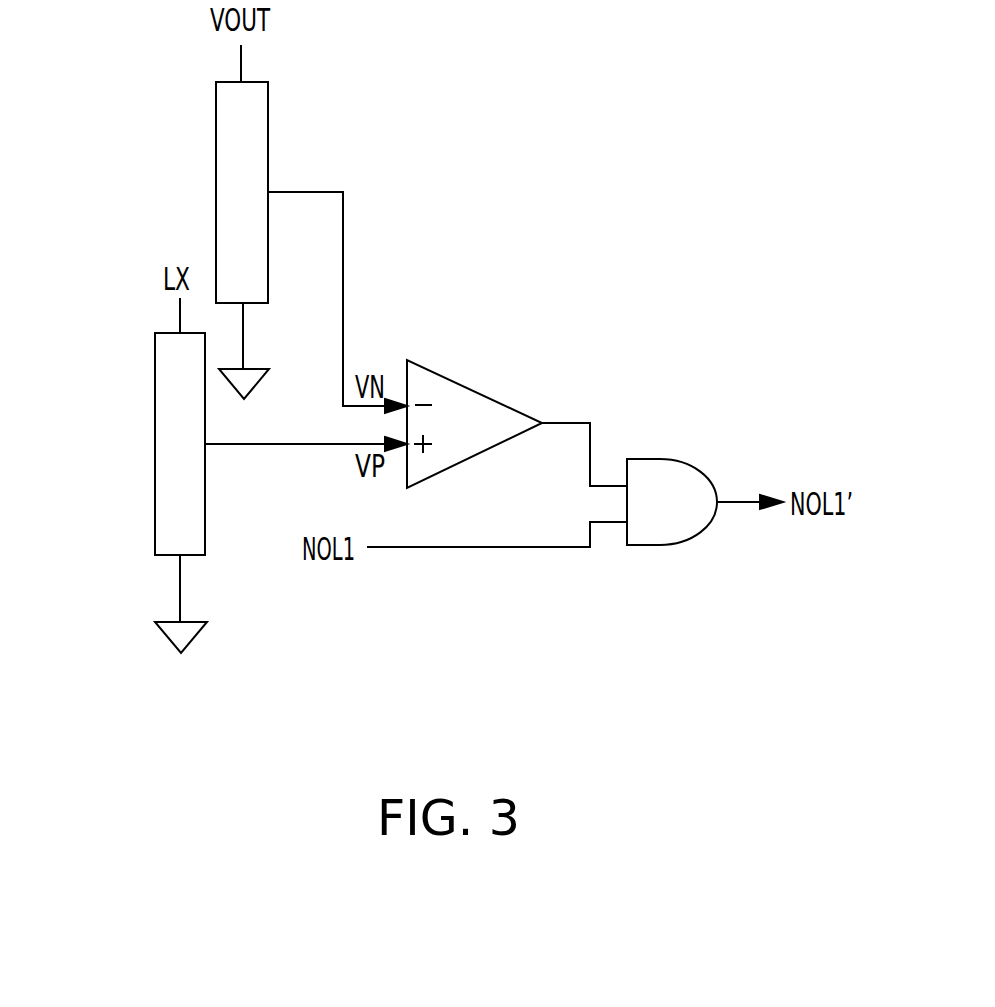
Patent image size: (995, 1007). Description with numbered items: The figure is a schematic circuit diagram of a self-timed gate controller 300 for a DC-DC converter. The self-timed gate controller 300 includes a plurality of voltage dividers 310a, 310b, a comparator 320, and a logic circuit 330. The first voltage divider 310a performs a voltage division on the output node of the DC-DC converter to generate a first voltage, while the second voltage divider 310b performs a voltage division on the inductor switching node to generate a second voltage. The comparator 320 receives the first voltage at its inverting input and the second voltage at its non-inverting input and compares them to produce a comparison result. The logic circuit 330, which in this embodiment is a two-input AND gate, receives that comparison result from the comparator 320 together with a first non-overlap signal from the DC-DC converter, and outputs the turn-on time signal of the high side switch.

The self-timed gate controller 300 is at (735, 661).
The first voltage divider 310a is at (268, 113).
The second voltage divider 310b is at (155, 378).
The comparator 320 is at (475, 388).
The logic circuit 330 is at (677, 460).